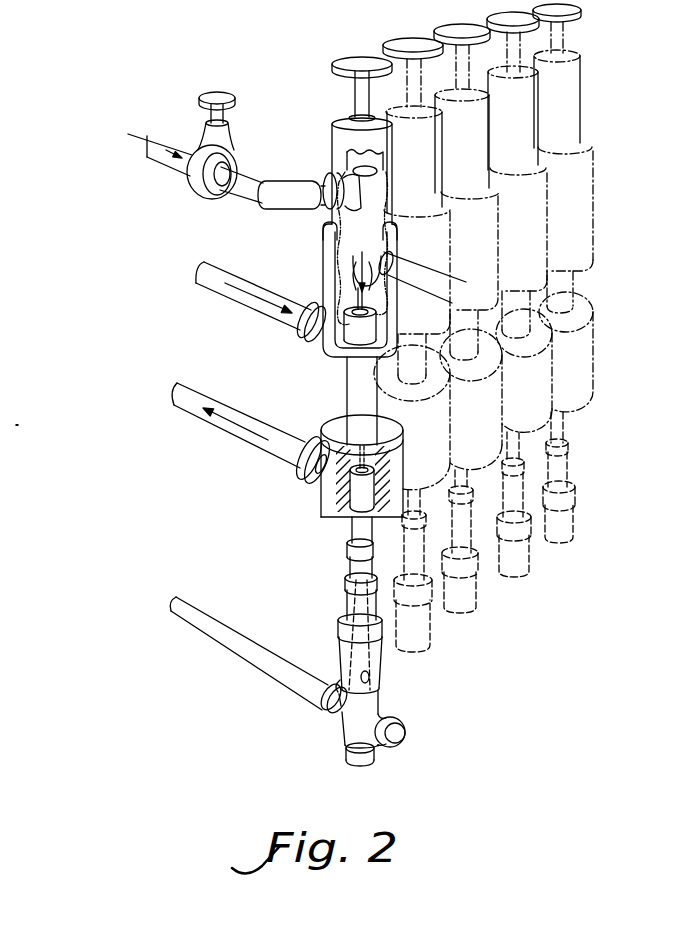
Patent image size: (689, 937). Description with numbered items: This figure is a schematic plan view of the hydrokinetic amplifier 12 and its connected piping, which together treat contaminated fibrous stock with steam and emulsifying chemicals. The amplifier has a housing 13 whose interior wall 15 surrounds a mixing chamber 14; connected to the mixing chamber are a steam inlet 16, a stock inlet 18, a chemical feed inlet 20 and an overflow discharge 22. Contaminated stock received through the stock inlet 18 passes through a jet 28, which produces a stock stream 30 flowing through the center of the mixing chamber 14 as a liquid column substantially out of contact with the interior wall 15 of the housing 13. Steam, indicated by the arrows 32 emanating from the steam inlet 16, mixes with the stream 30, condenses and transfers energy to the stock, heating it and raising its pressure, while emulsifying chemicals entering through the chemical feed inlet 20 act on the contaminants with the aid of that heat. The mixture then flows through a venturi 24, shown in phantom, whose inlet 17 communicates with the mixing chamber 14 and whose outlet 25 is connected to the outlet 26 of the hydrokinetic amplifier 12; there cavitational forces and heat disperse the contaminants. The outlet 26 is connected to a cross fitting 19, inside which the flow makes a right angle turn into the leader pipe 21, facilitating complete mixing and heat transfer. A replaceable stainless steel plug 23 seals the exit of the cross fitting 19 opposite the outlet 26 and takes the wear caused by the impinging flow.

The hydrokinetic amplifier 12 is at (324, 526).
The housing 13 is at (323, 273).
The mixing chamber 14 is at (346, 288).
The interior wall 15 is at (341, 263).
The steam inlet 16 is at (441, 289).
The inlet 17 is at (355, 550).
The stock inlet 18 is at (344, 161).
The cross fitting 19 is at (346, 716).
The chemical feed inlet 20 is at (320, 340).
The leader pipe 21 is at (236, 660).
The overflow discharge 22 is at (320, 488).
The stainless steel plug 23 is at (366, 770).
The venturi 24 is at (355, 608).
The outlet 25 is at (368, 684).
The outlet 26 is at (341, 688).
The jet 28 is at (330, 227).
The stock stream 30 is at (386, 313).
The arrows indicating steam 32 is at (392, 233).